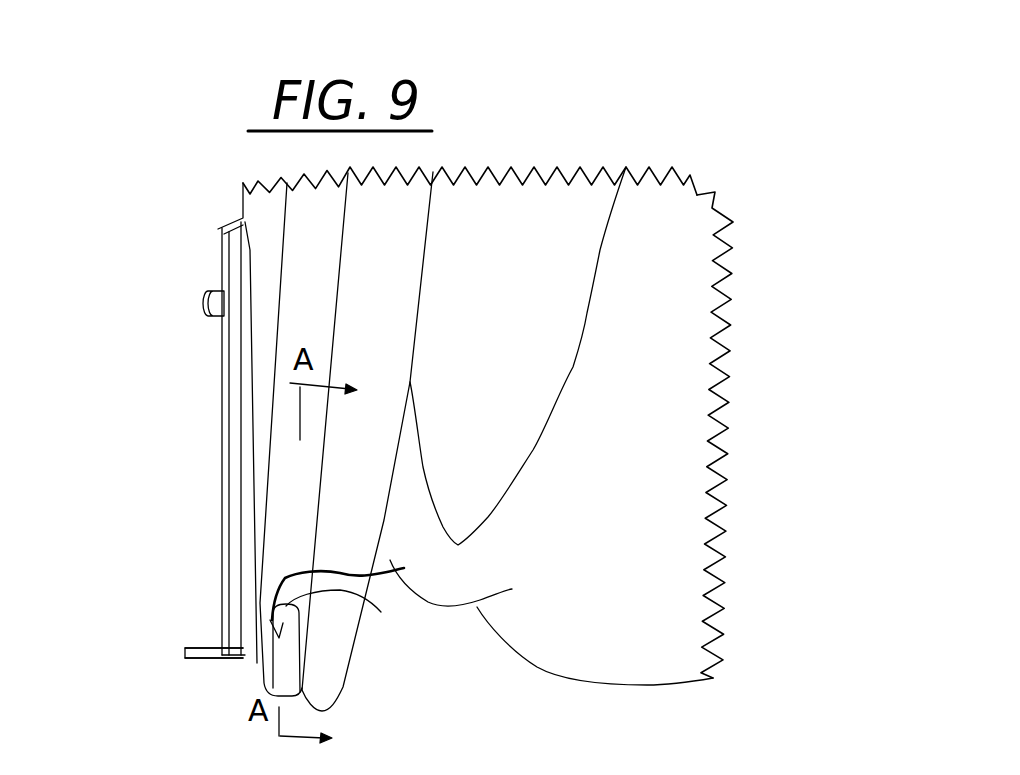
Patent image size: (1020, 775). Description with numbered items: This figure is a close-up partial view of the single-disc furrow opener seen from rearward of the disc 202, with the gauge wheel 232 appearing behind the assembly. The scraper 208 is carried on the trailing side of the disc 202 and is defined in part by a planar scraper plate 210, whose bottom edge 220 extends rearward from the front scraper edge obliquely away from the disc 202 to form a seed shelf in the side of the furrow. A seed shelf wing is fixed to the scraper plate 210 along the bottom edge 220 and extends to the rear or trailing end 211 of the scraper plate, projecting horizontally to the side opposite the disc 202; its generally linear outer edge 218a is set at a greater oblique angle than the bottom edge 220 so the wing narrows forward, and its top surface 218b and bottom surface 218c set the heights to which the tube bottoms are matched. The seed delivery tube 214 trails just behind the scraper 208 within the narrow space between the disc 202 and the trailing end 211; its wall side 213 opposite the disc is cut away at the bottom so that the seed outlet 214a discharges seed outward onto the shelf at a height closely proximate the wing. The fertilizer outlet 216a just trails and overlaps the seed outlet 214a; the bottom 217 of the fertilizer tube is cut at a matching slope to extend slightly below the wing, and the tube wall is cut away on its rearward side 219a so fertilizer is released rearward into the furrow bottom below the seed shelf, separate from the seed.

The disc 202 is at (350, 622).
The scraper 208 is at (211, 242).
The scraper plate 210 is at (222, 277).
The trailing end of the scraper plate 211 is at (233, 513).
The flange 213 is at (250, 382).
The seed delivery tube 214 is at (260, 333).
The seed outlet 214a is at (252, 630).
The fertilizer outlet 216a is at (405, 570).
The bottom of the fertilizer tube 217 is at (346, 613).
The outer edge of the wing 218a is at (185, 653).
The top surface of the wing 218b is at (210, 647).
The bottom surface of the wing 218c is at (203, 662).
The rearward side of the fertilizer tube 219a is at (285, 543).
The bottom edge of the scraper plate 220 is at (233, 667).
The gauge wheel 232 is at (547, 638).